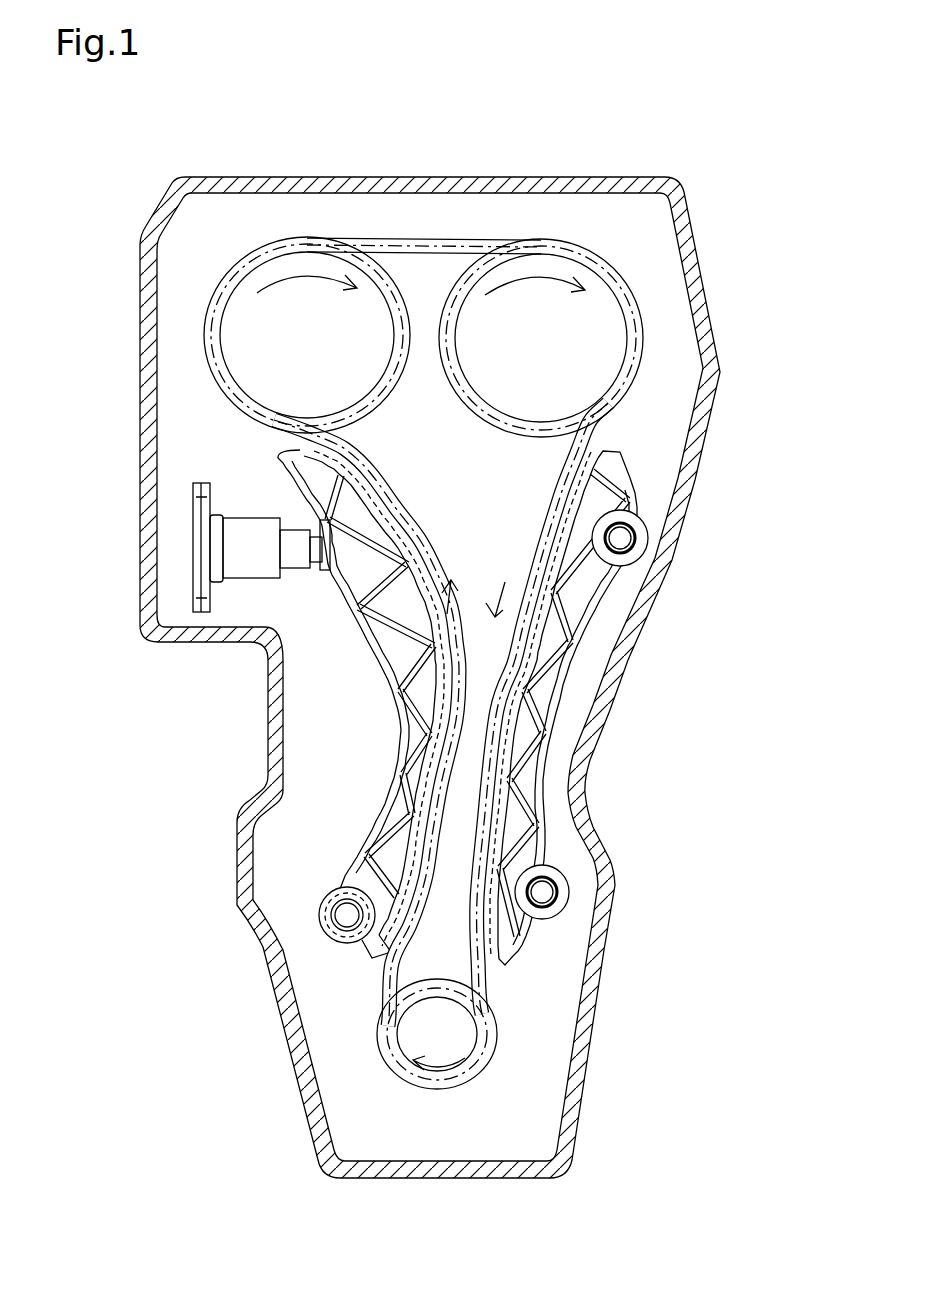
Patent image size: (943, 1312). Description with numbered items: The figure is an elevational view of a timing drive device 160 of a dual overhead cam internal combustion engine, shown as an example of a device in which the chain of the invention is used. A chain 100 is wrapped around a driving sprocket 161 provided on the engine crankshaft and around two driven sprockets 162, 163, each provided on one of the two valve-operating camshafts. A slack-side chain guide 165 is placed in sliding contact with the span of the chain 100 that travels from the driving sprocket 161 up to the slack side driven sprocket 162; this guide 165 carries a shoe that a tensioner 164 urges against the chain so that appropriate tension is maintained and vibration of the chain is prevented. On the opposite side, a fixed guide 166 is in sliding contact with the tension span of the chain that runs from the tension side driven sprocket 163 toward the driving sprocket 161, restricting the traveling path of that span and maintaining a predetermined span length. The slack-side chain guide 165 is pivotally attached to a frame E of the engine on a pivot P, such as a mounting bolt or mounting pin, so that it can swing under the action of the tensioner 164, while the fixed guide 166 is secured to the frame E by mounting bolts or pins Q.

The chain 100 is at (440, 601).
The timing drive device 160 is at (566, 122).
The driving sprocket 161 is at (467, 1045).
The driven sprocket 162 is at (257, 325).
The driven sprocket 163 is at (593, 327).
The tensioner 164 is at (253, 533).
The slack-side chain guide 165 is at (300, 704).
The fixed guide 166 is at (619, 708).
The pivot P is at (345, 915).
The mounting bolts or pins Q is at (622, 539).
The frame E is at (267, 953).